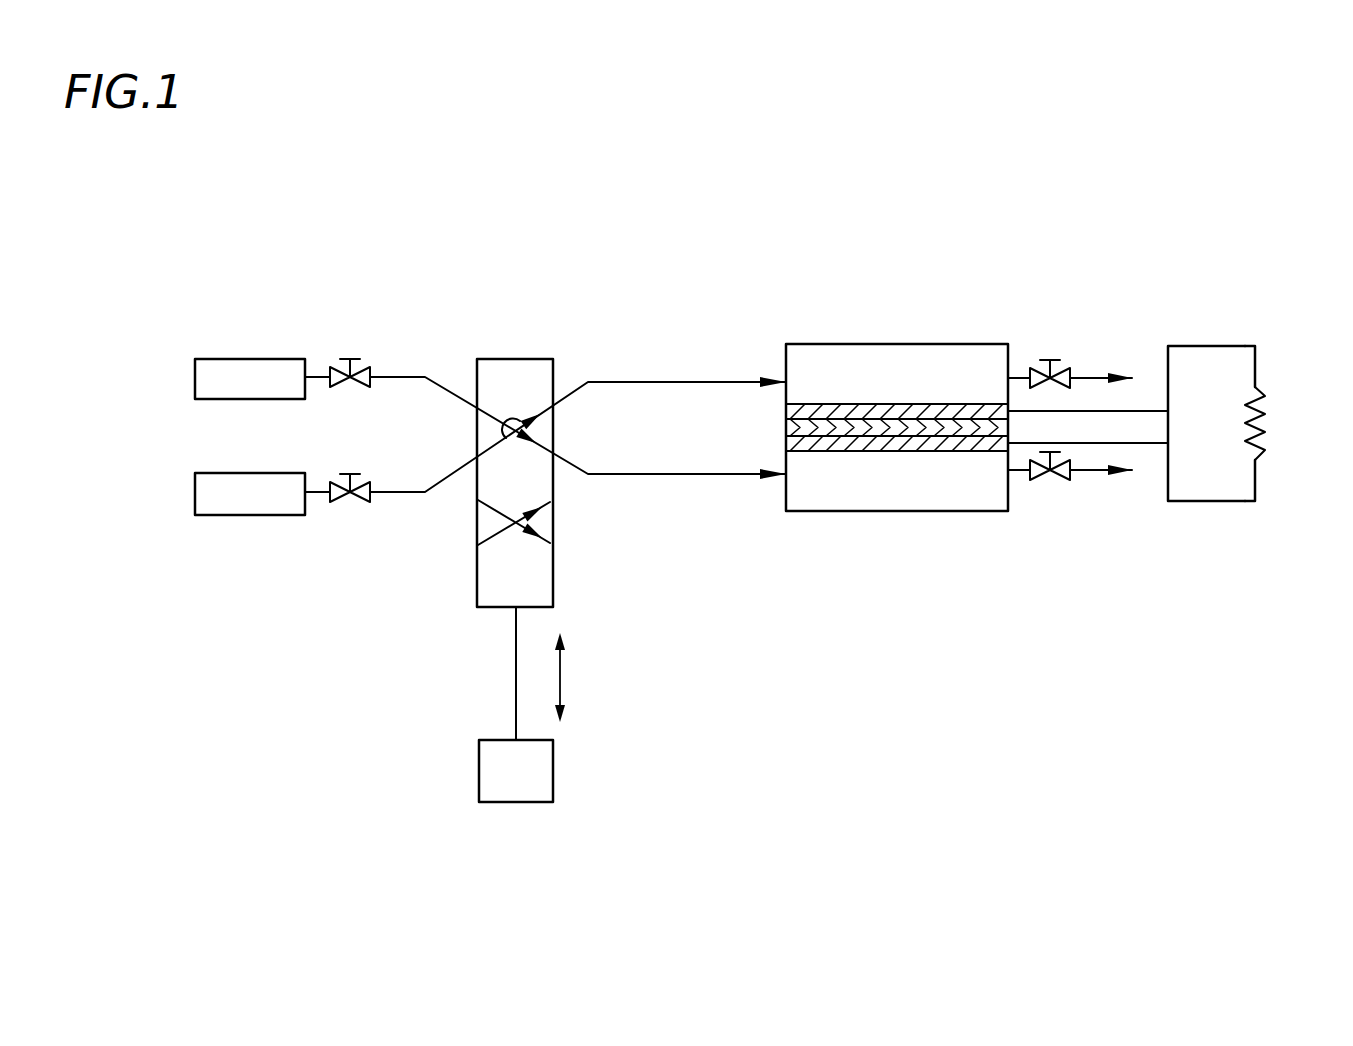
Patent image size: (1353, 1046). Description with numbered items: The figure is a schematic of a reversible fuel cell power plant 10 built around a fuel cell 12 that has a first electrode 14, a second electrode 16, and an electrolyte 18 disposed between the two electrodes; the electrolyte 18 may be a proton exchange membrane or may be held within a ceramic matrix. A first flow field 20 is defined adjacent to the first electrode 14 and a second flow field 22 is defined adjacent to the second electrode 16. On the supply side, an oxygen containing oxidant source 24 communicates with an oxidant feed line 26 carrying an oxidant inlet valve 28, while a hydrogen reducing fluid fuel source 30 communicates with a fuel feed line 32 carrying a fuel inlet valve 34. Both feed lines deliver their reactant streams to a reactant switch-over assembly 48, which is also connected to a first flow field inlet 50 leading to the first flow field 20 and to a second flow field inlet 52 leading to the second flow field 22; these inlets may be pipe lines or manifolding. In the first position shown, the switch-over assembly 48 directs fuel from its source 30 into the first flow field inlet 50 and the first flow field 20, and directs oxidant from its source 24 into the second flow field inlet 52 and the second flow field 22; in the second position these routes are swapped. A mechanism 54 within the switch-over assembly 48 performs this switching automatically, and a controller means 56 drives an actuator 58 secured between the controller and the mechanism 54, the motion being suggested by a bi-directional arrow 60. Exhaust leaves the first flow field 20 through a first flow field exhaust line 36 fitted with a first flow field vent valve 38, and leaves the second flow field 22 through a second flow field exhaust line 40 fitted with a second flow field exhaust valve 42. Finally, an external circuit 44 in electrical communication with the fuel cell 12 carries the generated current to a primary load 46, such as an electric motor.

The reversible fuel cell power plant 10 is at (1068, 198).
The fuel cell 12 is at (762, 337).
The first electrode 14 is at (786, 412).
The second electrode 16 is at (786, 440).
The electrolyte 18 is at (786, 428).
The first flow field 20 is at (920, 367).
The second flow field 22 is at (897, 480).
The oxygen containing oxidant source 24 is at (257, 375).
The oxidant feed line 26 is at (394, 377).
The oxidant inlet valve 28 is at (344, 359).
The hydrogen reducing fluid fuel source 30 is at (254, 498).
The fuel feed line 32 is at (390, 492).
The fuel inlet valve 34 is at (350, 498).
The first flow field exhaust line 36 is at (1082, 378).
The first flow field vent valve 38 is at (1048, 360).
The second flow field exhaust line 40 is at (1083, 470).
The second flow field exhaust valve 42 is at (1046, 478).
The external circuit 44 is at (1200, 346).
The primary load 46 is at (1263, 418).
The reactant switch-over assembly 48 is at (516, 352).
The first flow field inlet 50 is at (672, 381).
The second flow field inlet 52 is at (687, 475).
The mechanism 54 is at (553, 487).
The controller means 56 is at (540, 775).
The actuator 58 is at (516, 675).
The bi-directional arrow 60 is at (560, 675).